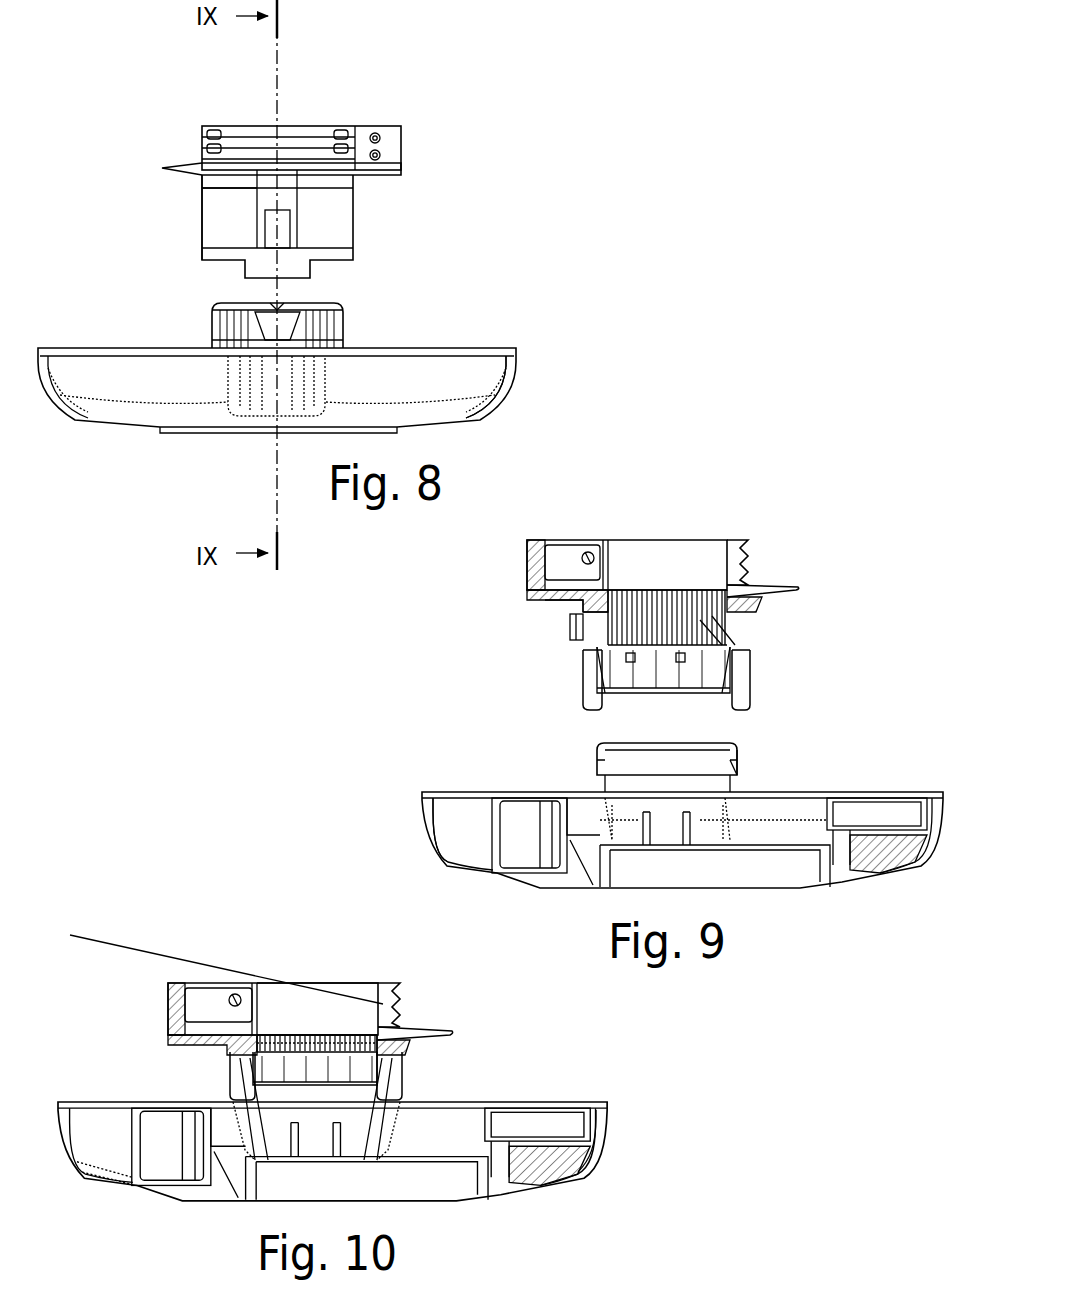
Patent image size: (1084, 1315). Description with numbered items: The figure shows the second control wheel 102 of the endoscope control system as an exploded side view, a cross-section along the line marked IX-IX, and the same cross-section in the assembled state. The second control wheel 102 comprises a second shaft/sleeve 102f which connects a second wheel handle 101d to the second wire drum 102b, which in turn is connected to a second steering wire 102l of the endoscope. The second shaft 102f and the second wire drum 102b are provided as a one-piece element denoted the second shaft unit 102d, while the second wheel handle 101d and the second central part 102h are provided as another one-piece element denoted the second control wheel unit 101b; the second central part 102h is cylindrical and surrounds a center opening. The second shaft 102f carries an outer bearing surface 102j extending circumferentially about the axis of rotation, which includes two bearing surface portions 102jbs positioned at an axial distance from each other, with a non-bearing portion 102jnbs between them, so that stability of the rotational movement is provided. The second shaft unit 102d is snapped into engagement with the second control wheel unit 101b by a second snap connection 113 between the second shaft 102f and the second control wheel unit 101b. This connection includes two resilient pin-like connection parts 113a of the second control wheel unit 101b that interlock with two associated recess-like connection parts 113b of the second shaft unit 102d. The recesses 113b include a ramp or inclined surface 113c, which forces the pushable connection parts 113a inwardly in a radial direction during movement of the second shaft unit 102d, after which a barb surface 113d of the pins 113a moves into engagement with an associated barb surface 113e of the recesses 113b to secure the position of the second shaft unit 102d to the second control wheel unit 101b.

In FIG. 8, the second control wheel unit 101b is at (518, 416).
In FIG. 9, the second control wheel unit 101b is at (815, 895).
In FIG. 10, the second control wheel unit 101b is at (610, 1168).
In FIG. 8, the second wheel handle 101d is at (515, 368).
In FIG. 9, the second wheel handle 101d is at (443, 827).
In FIG. 10, the second wheel handle 101d is at (597, 1137).
In FIG. 10, the second control wheel 102 is at (226, 878).
In FIG. 8, the second wire drum 102b is at (350, 130).
In FIG. 9, the second wire drum 102b is at (738, 542).
In FIG. 10, the second wire drum 102b is at (383, 984).
In FIG. 8, the second shaft unit 102d is at (380, 235).
In FIG. 9, the second shaft unit 102d is at (764, 553).
In FIG. 10, the second shaft unit 102d is at (462, 1024).
In FIG. 8, the second shaft/sleeve 102f is at (232, 215).
In FIG. 9, the second shaft/sleeve 102f is at (583, 668).
In FIG. 10, the second shaft/sleeve 102f is at (228, 1101).
In FIG. 8, the second central part 102h is at (332, 323).
In FIG. 9, the second central part 102h is at (737, 766).
In FIG. 8, the outer bearing surface 102j is at (337, 225).
In FIG. 9, the bearing surface portions 102jbs is at (578, 602).
In FIG. 9, the non-bearing portion 102jnbs is at (572, 623).
In FIG. 10, the second steering wire 102l is at (108, 947).
In FIG. 10, the second snap connection 113 is at (400, 1075).
In FIG. 8, the connection parts 113a is at (243, 322).
In FIG. 9, the connection parts 113a is at (597, 768).
In FIG. 10, the connection parts 113a is at (240, 1078).
In FIG. 8, the connection parts 113b is at (270, 228).
In FIG. 9, the connection parts 113b is at (572, 633).
In FIG. 9, the ramp or inclined surface 113c is at (735, 645).
In FIG. 9, the barb surface 113d is at (740, 780).
In FIG. 9, the barb surface 113e is at (718, 636).